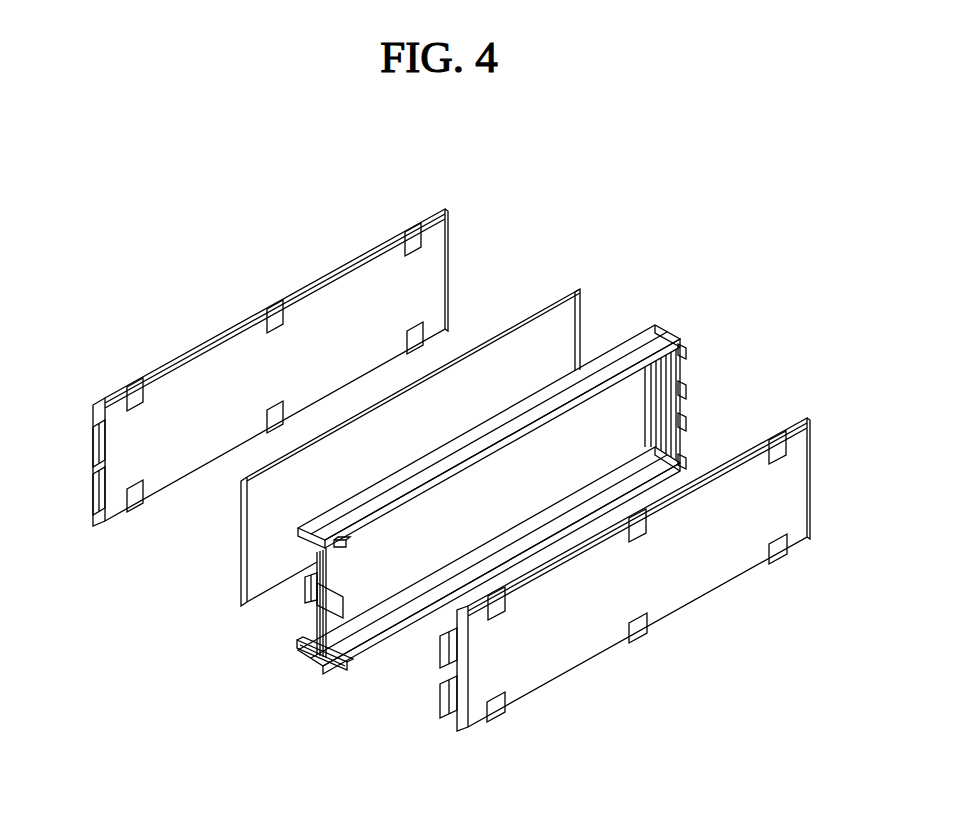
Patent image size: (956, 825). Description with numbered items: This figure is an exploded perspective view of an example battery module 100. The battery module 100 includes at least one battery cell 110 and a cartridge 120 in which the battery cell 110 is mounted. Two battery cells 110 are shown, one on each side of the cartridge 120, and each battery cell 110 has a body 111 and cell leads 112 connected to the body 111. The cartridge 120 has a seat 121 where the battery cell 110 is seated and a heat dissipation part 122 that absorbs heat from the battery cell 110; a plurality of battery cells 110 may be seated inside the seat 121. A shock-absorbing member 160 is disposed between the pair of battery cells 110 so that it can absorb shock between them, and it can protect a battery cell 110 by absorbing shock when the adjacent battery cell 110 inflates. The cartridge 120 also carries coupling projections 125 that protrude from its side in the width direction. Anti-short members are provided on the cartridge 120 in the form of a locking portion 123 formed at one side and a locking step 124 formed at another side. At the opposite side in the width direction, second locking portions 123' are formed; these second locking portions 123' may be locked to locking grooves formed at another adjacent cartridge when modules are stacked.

The battery module 100 is at (133, 172).
The battery cell 110 is at (442, 207).
The body 111 is at (335, 327).
The cell leads 112 is at (93, 480).
The cartridge 120 is at (635, 322).
The seat 121 is at (660, 438).
The heat dissipation part 122 is at (482, 547).
The locking portion 123 is at (362, 642).
The second locking portions 123' is at (717, 403).
The locking step 124 is at (305, 590).
The coupling projections 125 is at (684, 352).
The shock-absorbing member 160 is at (559, 300).